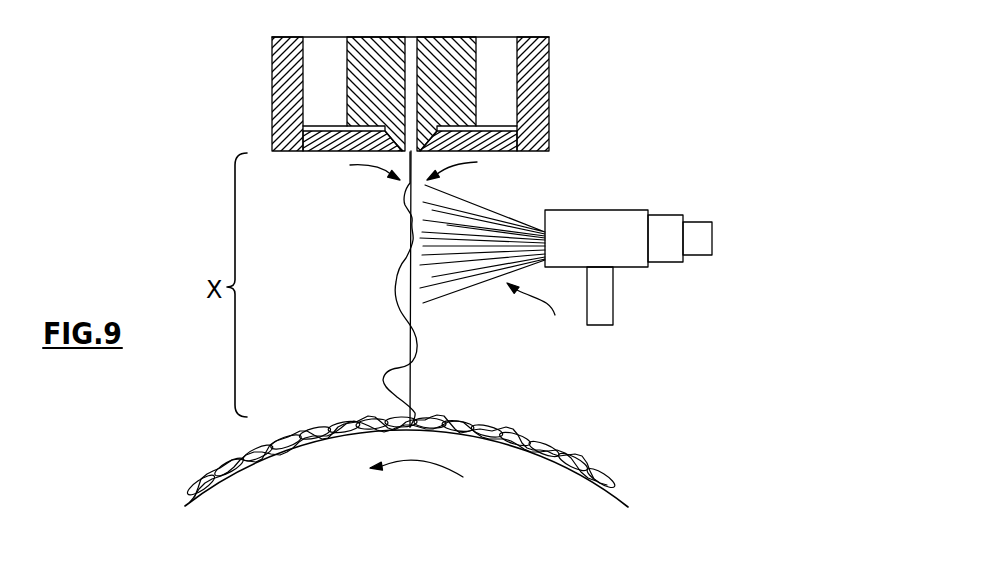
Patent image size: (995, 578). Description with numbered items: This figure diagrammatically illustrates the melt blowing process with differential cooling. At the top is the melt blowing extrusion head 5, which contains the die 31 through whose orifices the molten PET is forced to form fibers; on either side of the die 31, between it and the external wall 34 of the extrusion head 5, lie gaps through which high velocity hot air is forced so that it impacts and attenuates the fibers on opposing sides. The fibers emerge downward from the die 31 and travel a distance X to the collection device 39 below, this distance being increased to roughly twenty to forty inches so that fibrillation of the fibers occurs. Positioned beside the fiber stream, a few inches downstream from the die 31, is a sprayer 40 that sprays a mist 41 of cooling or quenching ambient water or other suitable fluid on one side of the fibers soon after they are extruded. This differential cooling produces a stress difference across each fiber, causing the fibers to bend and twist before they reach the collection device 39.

The melt blowing extrusion head 5 is at (449, 81).
The die 31 is at (443, 42).
The external wall 34 is at (548, 130).
The collection device 39 is at (610, 493).
The sprayer 40 is at (616, 218).
The mist 41 is at (507, 210).